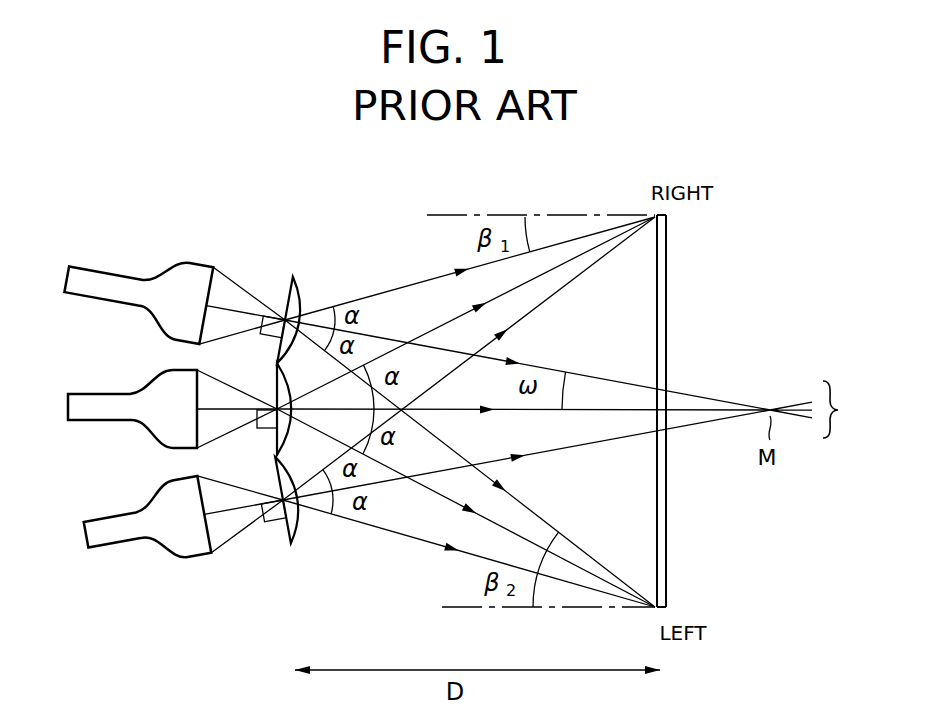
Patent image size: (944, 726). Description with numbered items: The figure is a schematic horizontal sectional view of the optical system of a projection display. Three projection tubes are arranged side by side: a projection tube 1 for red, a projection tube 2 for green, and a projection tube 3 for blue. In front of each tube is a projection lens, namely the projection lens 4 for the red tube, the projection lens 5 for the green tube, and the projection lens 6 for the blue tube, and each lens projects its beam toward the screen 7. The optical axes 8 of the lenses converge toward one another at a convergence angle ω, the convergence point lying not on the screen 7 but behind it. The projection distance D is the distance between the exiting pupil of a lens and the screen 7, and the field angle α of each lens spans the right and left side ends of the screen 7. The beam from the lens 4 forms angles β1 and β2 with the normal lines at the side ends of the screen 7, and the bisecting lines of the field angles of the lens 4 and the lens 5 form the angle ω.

The projection tube for red 1 is at (82, 275).
The projection tube for green 2 is at (80, 403).
The projection tube for blue 3 is at (98, 532).
The projection lens 4 is at (294, 290).
The projection lens 5 is at (280, 392).
The projection lens 6 is at (289, 527).
The screen 7 is at (668, 259).
The optical axes of the lenses 8 is at (815, 409).